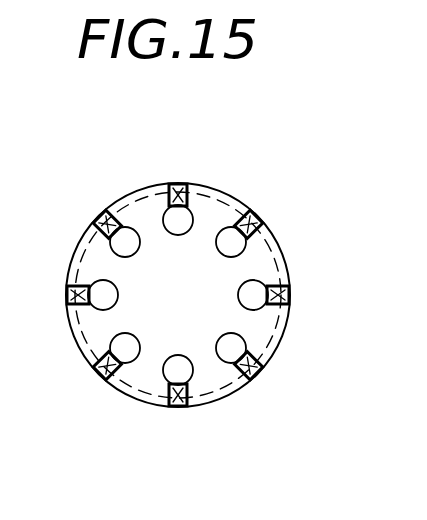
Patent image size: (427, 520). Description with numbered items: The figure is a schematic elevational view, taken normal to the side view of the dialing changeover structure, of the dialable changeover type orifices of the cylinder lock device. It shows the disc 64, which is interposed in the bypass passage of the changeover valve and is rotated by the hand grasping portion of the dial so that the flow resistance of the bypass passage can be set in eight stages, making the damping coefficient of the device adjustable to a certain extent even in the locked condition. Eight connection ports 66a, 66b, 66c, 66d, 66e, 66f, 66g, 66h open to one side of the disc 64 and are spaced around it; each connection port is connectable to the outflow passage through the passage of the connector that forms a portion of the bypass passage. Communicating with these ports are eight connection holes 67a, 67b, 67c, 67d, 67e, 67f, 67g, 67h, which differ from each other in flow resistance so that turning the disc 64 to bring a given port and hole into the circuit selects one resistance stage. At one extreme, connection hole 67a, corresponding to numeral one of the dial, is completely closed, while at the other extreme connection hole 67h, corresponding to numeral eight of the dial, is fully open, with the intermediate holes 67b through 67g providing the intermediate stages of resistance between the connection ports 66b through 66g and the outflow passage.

The disc 64 is at (210, 272).
The connection port 66a is at (167, 382).
The connection port 66b is at (110, 346).
The connection port 66c is at (91, 284).
The connection port 66d is at (130, 227).
The connection port 66e is at (193, 208).
The connection port 66f is at (245, 251).
The connection port 66g is at (264, 306).
The connection port 66h is at (222, 361).
The connection hole 67a is at (177, 409).
The connection hole 67b is at (99, 374).
The connection hole 67c is at (66, 294).
The connection hole 67d is at (100, 216).
The connection hole 67e is at (178, 183).
The connection hole 67f is at (258, 214).
The connection hole 67g is at (291, 294).
The connection hole 67h is at (259, 382).